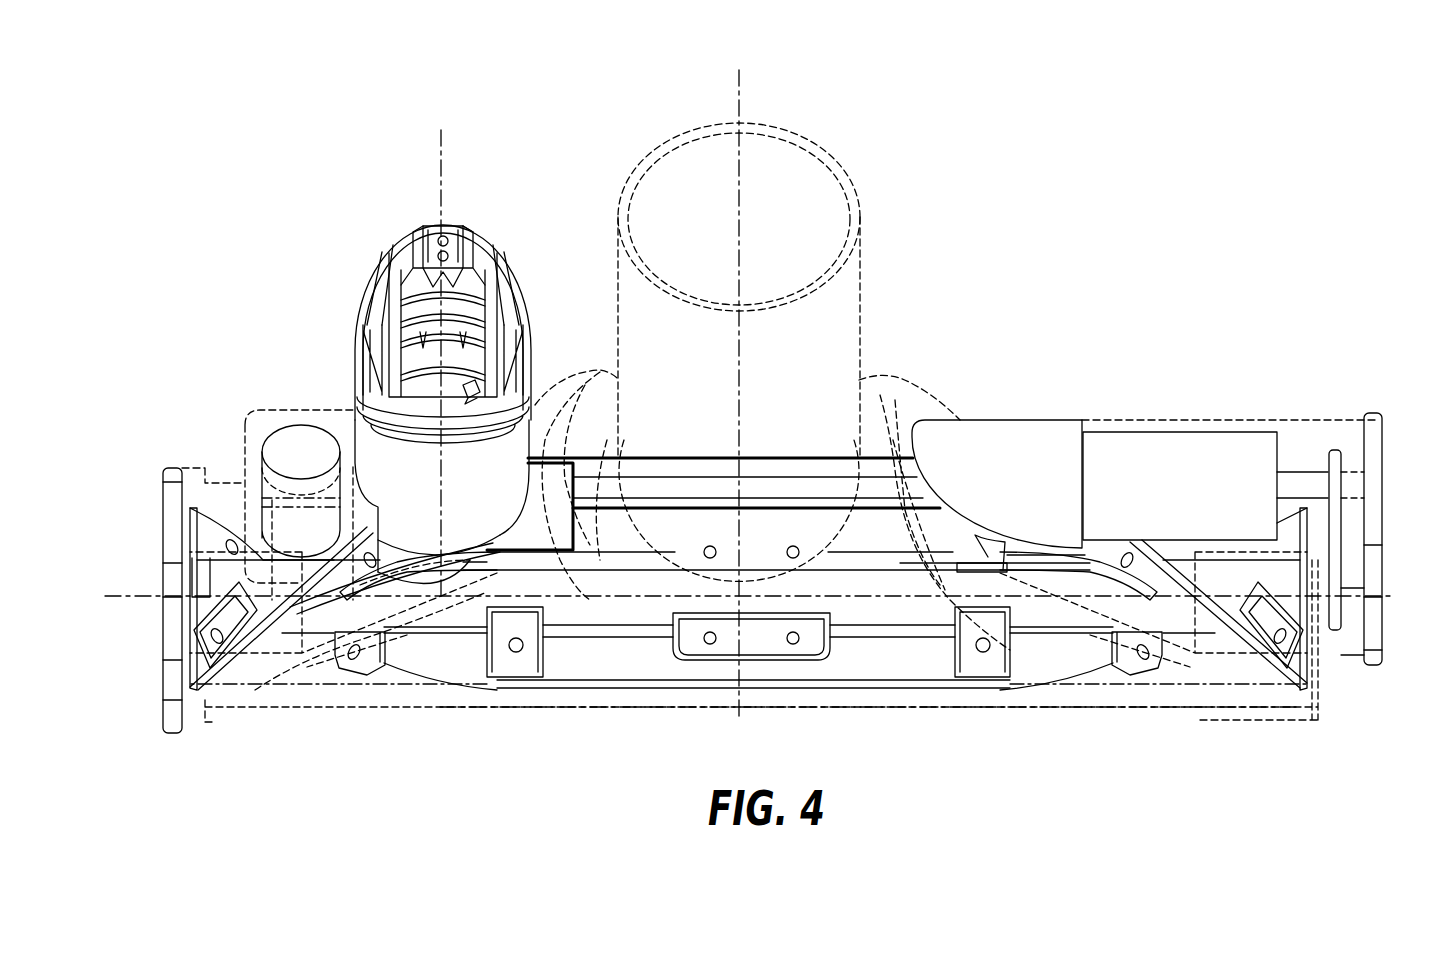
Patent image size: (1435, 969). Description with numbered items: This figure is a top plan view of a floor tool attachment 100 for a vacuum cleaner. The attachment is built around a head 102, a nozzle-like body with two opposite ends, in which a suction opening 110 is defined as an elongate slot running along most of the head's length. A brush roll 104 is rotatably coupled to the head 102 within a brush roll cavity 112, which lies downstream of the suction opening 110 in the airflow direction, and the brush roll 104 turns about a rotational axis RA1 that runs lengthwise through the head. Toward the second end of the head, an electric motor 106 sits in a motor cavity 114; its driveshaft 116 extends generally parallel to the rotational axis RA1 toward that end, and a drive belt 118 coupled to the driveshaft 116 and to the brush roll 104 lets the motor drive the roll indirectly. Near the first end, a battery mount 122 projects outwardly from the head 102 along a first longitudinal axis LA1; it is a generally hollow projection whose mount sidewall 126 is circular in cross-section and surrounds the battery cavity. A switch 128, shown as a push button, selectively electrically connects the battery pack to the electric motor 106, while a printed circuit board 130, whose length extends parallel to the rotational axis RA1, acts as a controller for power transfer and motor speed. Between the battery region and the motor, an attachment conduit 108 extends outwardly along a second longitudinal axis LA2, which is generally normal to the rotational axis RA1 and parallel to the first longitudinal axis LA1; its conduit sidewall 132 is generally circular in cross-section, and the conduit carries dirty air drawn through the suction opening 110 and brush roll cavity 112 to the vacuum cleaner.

The floor tool attachment 100 is at (1133, 181).
The head 102 is at (880, 440).
The brush roll 104 is at (577, 612).
The electric motor 106 is at (1148, 470).
The attachment conduit 108 is at (860, 262).
The suction opening 110 is at (900, 708).
The brush roll cavity 112 is at (775, 637).
The motor cavity 114 is at (1203, 413).
The driveshaft 116 is at (1295, 470).
The drive belt 118 is at (1342, 532).
The battery mount 122 is at (372, 445).
The mount sidewall 126 is at (508, 283).
The switch 128 is at (298, 450).
The printed circuit board (PCB) 130 is at (555, 468).
The conduit sidewall 132 is at (657, 155).
The first longitudinal axis LA1 is at (437, 200).
The second longitudinal axis LA2 is at (741, 143).
The rotational axis RA1 is at (135, 592).